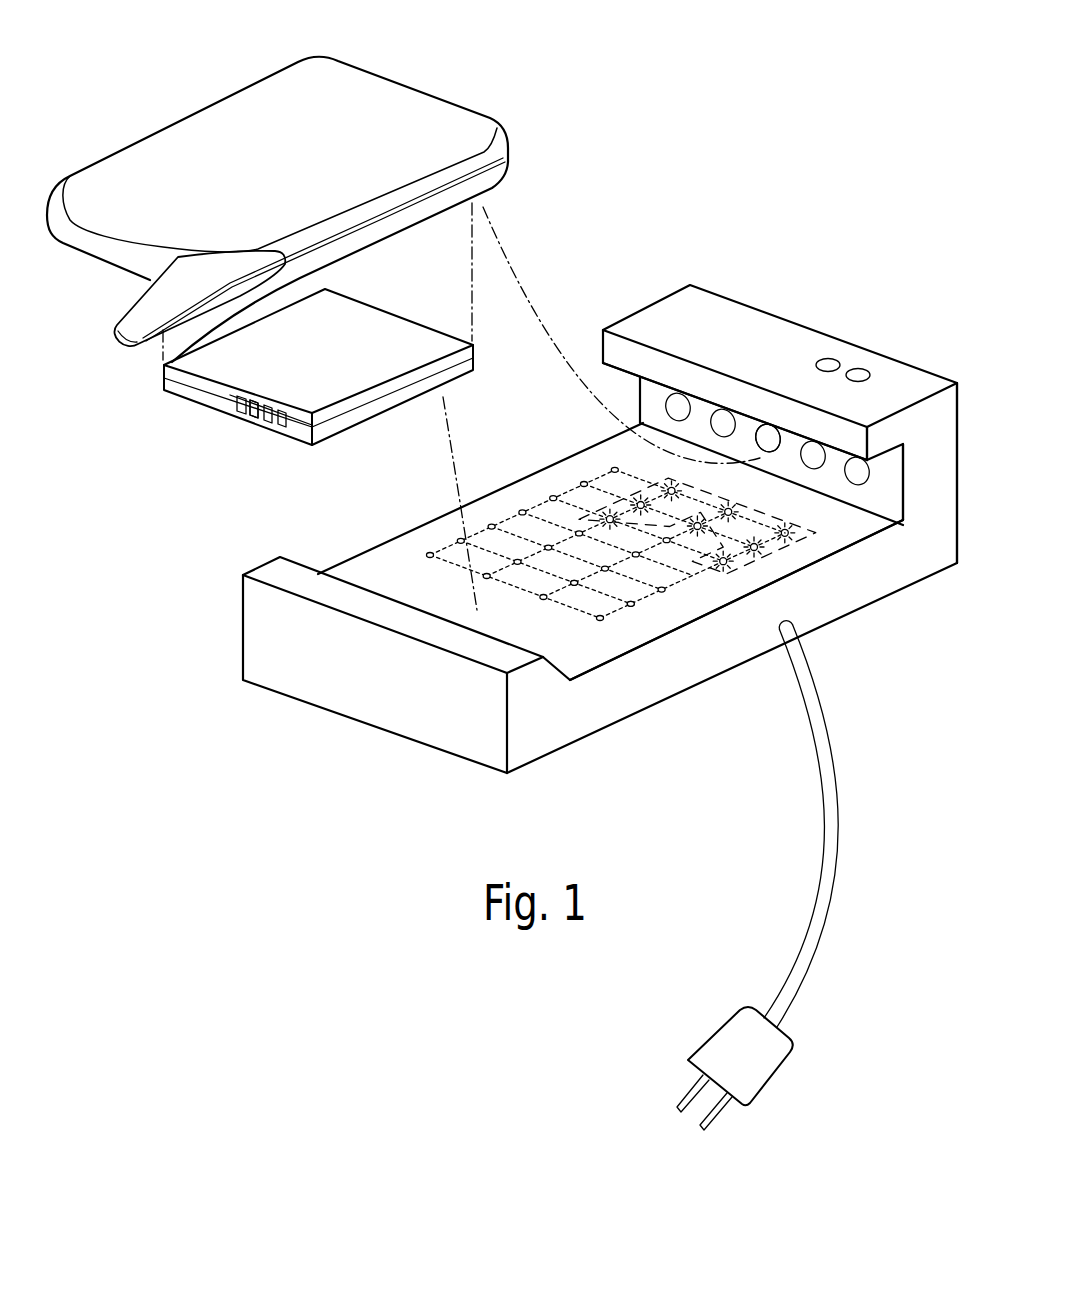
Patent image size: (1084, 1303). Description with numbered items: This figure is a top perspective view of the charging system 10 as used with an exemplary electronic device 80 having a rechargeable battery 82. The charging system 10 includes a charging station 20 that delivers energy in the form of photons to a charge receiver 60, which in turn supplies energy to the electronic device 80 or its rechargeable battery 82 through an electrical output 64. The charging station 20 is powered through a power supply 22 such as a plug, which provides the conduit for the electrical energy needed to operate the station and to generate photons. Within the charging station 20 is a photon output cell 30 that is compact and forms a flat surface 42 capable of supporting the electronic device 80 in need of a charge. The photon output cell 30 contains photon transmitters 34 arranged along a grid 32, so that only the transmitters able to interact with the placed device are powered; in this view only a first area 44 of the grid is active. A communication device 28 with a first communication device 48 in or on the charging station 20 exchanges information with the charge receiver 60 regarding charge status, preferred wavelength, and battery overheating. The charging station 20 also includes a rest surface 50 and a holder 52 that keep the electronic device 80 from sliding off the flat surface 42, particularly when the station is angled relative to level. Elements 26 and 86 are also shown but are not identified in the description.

The charging system 10 is at (625, 136).
The charging station 20 is at (735, 672).
The power supply 22 is at (723, 1048).
The top aperture 26 is at (834, 363).
The communication device 28 is at (780, 440).
The photon output cell 30 is at (468, 566).
The grid 32 is at (617, 597).
The photon transmitters 34 is at (574, 587).
The flat surface 42 is at (647, 623).
The first area 44 is at (800, 537).
The first communication device 48 is at (767, 429).
The rest surface 50 is at (890, 485).
The holder 52 is at (852, 431).
The charge receiver 60 is at (292, 438).
The electrical output 64 is at (237, 414).
The electronic device 80 is at (411, 110).
The rechargeable battery 82 is at (397, 325).
The contact 86 is at (253, 424).